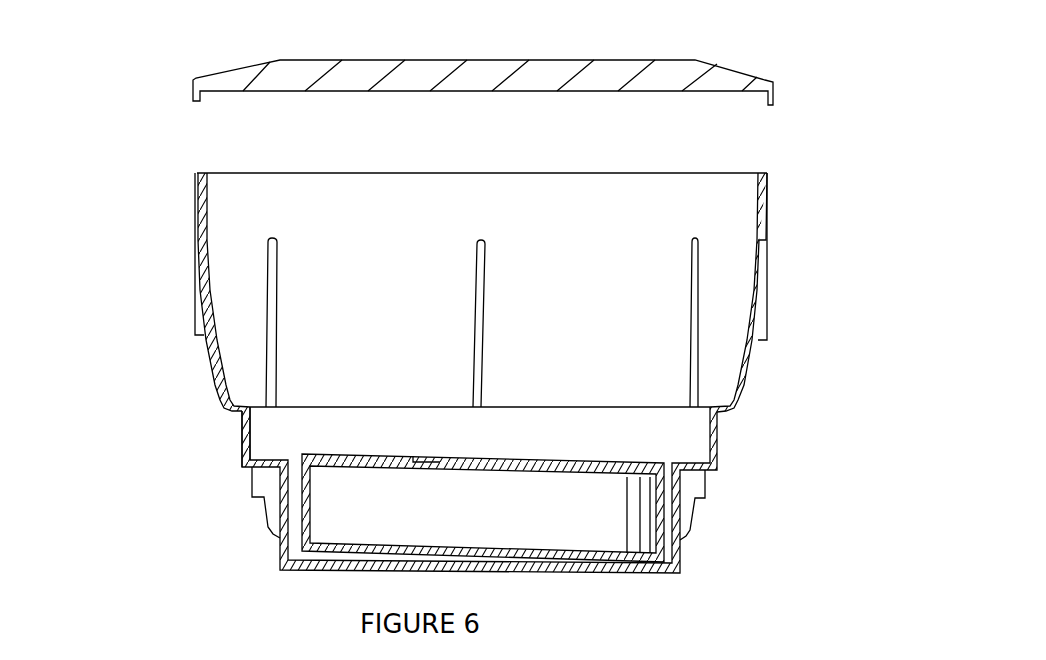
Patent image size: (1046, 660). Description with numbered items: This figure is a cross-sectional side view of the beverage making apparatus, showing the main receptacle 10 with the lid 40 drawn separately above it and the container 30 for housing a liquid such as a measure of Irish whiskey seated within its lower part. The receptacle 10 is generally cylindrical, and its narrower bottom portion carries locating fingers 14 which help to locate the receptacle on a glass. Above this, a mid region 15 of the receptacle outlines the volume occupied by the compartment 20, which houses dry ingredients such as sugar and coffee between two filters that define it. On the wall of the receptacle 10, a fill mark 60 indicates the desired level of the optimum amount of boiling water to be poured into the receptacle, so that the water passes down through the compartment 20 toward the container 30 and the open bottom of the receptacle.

The receptacle 10 is at (750, 363).
The locating fingers 14 is at (685, 503).
The mid region 15 is at (235, 433).
The compartment 20 is at (638, 445).
The container 30 is at (340, 518).
The lid 40 is at (740, 62).
The fill mark 60 is at (700, 238).